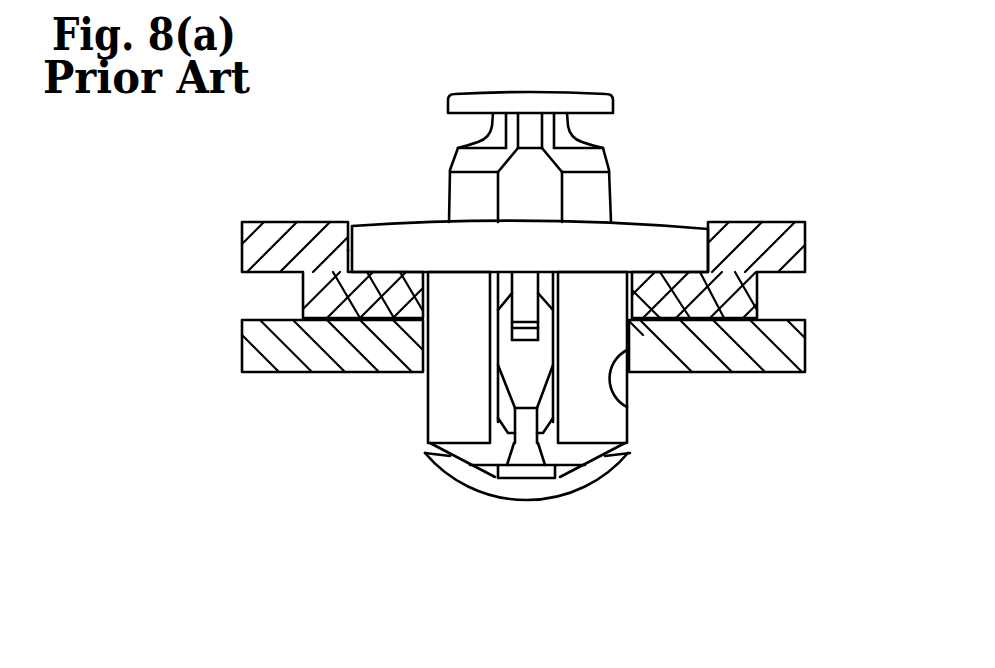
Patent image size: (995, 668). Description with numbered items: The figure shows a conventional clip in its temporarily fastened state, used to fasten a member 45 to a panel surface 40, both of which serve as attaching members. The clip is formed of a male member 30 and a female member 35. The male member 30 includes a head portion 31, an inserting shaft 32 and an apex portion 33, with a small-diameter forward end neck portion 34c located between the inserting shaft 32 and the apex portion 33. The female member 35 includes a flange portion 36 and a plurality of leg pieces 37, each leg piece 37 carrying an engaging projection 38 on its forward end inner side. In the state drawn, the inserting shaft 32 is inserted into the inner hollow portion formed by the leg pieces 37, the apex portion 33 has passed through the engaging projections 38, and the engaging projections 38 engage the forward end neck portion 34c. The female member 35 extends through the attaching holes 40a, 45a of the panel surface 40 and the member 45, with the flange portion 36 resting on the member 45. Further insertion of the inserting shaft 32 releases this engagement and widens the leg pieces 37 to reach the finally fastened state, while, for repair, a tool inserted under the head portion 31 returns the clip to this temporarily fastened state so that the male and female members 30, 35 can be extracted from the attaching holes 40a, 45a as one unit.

The male member 30 is at (589, 314).
The head portion 31 is at (581, 88).
The inserting shaft 32 is at (598, 197).
The apex portion 33 is at (503, 492).
The forward end neck portion 34c is at (527, 467).
The female member 35 is at (377, 219).
The flange portion 36 is at (413, 235).
The leg pieces 37 is at (440, 400).
The engaging projection 38 is at (447, 480).
The panel surface (attaching member) 40 is at (262, 320).
The attaching hole 40a is at (628, 405).
The member (attaching member) 45 is at (260, 250).
The attaching hole 45a is at (633, 293).